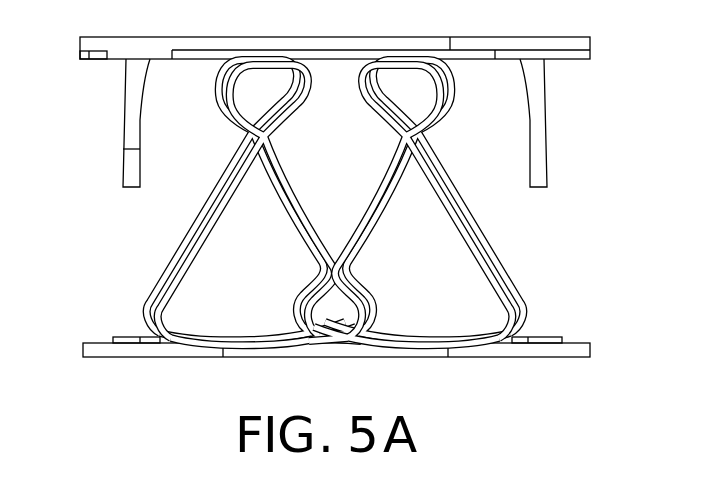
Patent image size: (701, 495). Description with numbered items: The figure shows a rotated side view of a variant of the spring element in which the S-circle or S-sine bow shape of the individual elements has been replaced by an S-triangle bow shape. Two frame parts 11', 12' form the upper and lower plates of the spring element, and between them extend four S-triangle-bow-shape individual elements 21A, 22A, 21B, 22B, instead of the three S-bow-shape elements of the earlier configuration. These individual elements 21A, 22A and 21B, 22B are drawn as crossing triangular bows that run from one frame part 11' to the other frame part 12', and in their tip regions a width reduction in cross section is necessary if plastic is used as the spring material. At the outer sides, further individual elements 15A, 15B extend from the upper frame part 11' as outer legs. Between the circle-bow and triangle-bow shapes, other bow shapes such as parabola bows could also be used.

The frame part 11' is at (335, 30).
The frame part 12' is at (336, 364).
The further individual element 15A is at (134, 113).
The further individual element 15B is at (540, 147).
The S-triangle-bow-shape individual element 21A is at (180, 258).
The S-triangle-bow-shape individual element 22A is at (312, 232).
The S-triangle-bow-shape individual element 21B is at (357, 235).
The S-triangle-bow-shape individual element 22B is at (503, 265).